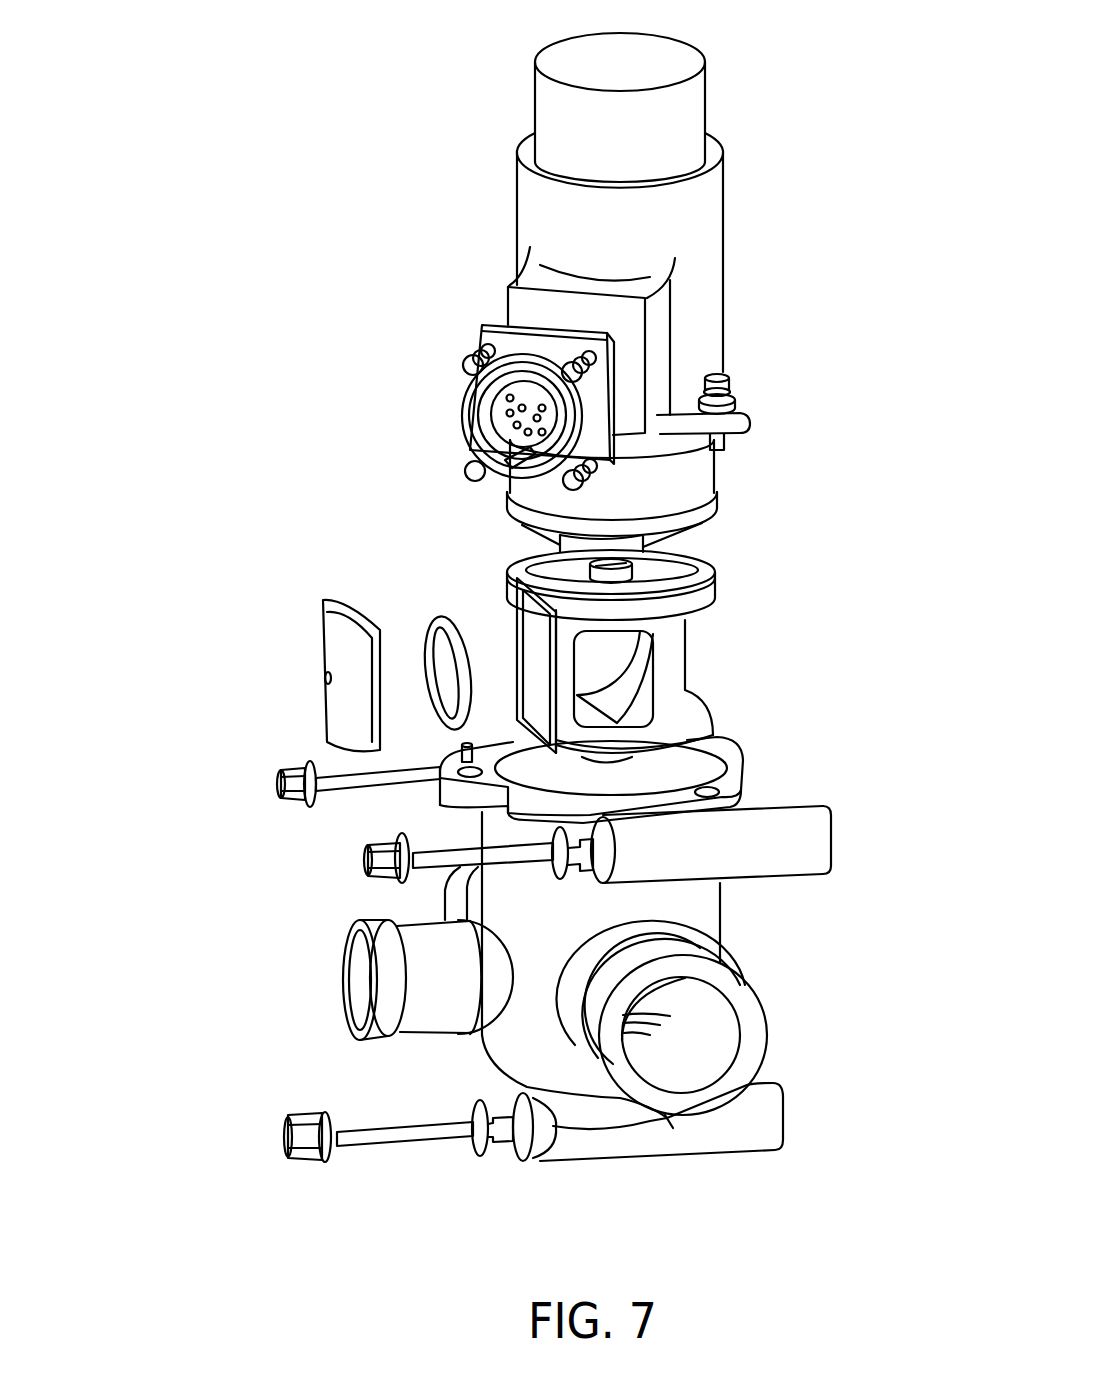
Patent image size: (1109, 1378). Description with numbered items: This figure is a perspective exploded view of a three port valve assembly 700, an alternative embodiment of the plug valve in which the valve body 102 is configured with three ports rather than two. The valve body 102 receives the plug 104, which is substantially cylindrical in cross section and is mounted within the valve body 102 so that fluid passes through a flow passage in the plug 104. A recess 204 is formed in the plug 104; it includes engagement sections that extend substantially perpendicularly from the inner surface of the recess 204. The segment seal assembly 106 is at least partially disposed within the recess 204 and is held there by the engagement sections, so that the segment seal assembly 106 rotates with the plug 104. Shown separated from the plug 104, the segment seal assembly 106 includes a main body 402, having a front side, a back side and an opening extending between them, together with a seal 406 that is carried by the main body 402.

The three port valve assembly 700 is at (529, 581).
The valve body 102 is at (745, 800).
The plug 104 is at (727, 584).
The segment seal assembly 106 is at (327, 645).
The recess 204 is at (513, 598).
The main body 402 is at (342, 600).
The seal 406 is at (440, 632).